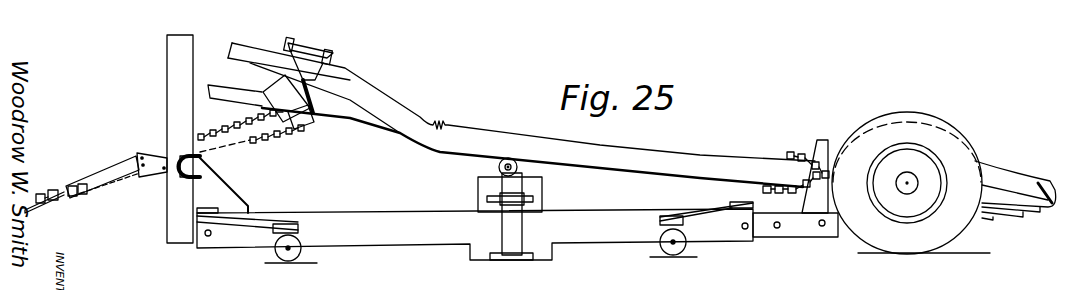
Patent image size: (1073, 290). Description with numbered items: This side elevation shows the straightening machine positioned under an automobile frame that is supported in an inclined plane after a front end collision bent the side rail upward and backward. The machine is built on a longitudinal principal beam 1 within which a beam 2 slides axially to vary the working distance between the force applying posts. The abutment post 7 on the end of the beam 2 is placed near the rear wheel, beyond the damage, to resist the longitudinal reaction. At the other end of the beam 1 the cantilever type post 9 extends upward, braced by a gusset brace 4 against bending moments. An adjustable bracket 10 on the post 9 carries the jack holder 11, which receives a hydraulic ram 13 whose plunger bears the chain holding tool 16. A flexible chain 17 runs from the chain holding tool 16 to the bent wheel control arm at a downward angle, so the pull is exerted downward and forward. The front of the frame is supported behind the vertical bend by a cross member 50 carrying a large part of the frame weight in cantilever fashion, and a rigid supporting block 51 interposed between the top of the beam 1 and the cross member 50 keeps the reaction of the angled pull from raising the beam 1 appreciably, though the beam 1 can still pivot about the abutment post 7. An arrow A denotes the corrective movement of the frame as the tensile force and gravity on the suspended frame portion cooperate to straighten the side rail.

The longitudinal principal beam 1 is at (340, 213).
The beam 2 is at (800, 228).
The gusset brace 4 is at (226, 194).
The abutment post 7 is at (817, 149).
The cantilever type post 9 is at (168, 62).
The adjustable bracket 10 is at (148, 146).
The jack holder 11 is at (110, 167).
The hydraulic ram 13 is at (62, 188).
The chain holding tool 16 is at (52, 206).
The flexible chain 17 is at (302, 136).
The cross member 50 is at (498, 167).
The rigid supporting block 51 is at (487, 189).
The arrow A is at (255, 42).